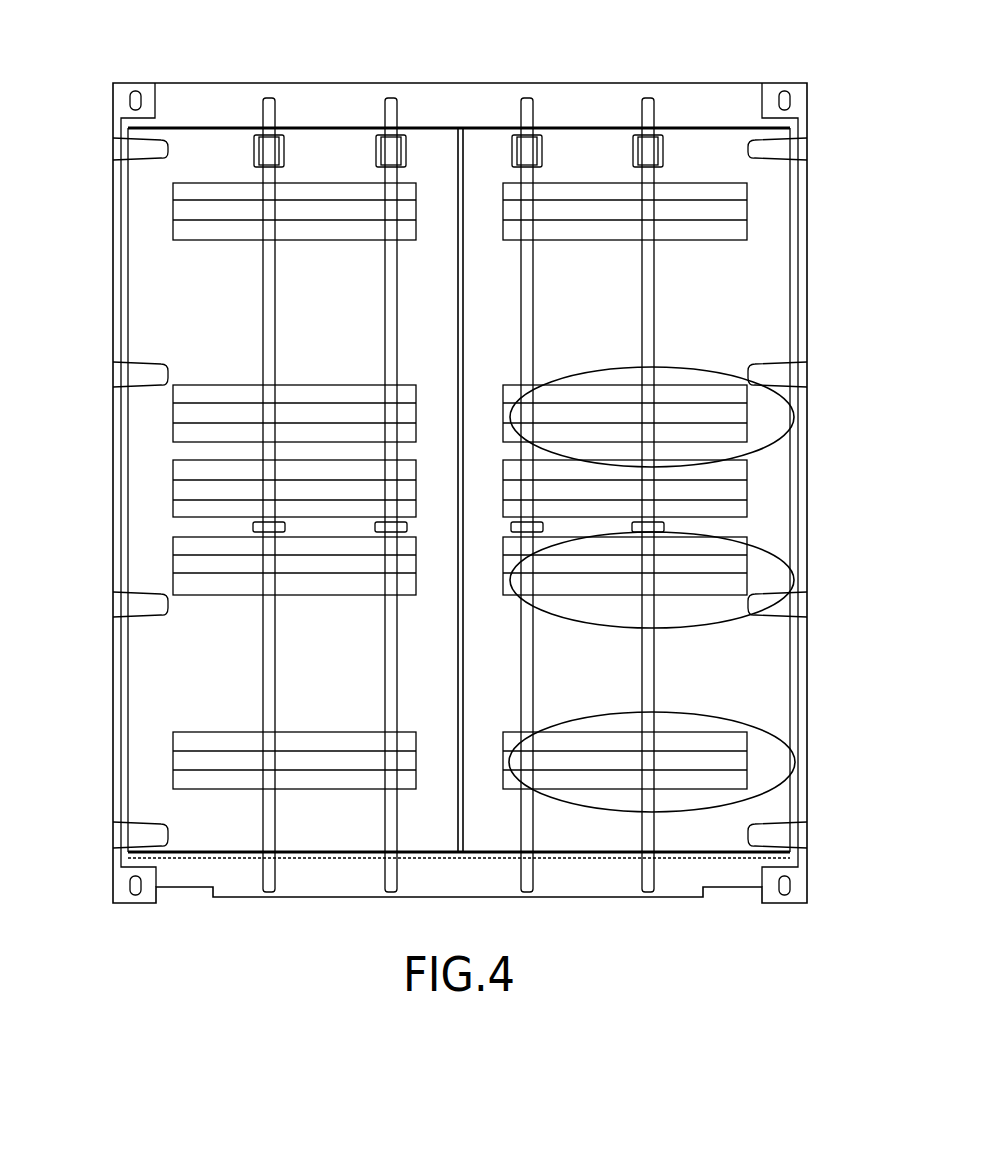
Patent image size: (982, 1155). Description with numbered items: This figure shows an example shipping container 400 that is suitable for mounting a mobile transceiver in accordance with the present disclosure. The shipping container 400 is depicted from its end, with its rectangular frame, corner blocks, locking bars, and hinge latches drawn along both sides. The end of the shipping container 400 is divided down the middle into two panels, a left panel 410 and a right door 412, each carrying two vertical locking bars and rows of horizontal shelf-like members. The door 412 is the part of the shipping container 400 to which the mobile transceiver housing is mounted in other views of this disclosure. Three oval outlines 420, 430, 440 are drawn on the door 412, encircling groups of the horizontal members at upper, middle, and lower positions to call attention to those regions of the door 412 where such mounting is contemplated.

The shipping container 400 is at (697, 83).
The left door / first side panel 410 is at (177, 290).
The door 412 is at (758, 290).
The first shelf region 420 is at (765, 447).
The second shelf region 430 is at (767, 547).
The third shelf region 440 is at (765, 733).